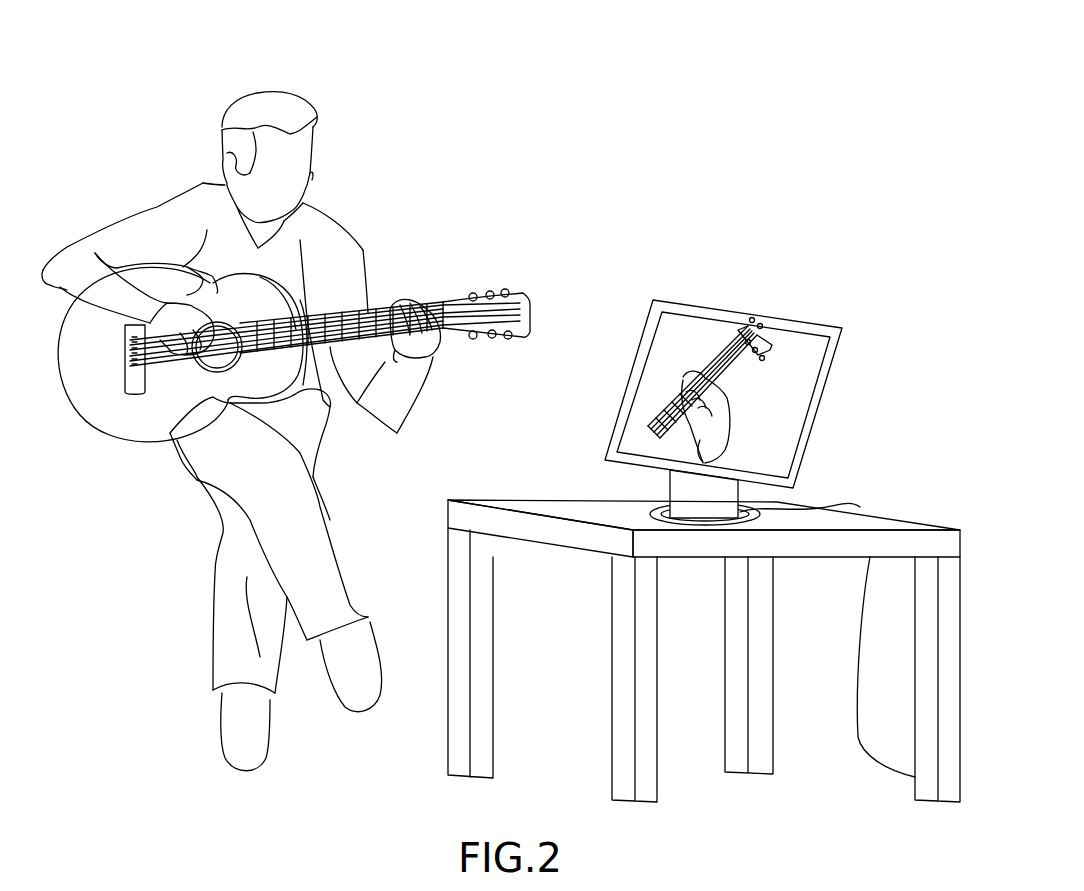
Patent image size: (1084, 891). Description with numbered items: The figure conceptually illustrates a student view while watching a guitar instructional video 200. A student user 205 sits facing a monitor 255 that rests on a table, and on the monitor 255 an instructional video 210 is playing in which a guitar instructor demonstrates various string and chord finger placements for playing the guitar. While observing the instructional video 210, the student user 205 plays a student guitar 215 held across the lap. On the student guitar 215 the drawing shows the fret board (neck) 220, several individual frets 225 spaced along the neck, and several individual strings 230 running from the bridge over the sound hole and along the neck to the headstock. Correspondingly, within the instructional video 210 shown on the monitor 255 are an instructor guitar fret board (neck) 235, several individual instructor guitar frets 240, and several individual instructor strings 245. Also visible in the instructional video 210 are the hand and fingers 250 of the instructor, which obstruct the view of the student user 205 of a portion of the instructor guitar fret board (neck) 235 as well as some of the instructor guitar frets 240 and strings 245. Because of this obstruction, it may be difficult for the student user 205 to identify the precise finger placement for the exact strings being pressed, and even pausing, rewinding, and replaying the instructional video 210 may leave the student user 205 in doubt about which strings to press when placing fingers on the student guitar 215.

The guitar instructional video (student view) 200 is at (734, 85).
The student user 205 is at (238, 130).
The instructional video 210 is at (693, 330).
The student guitar 215 is at (128, 413).
The fret board (neck) 220 is at (397, 433).
The frets 225 is at (380, 320).
The strings 230 is at (333, 457).
The instructor guitar fret board (neck) 235 is at (670, 403).
The instructor guitar frets 240 is at (653, 430).
The instructor strings 245 is at (773, 363).
The hand and fingers 250 is at (717, 402).
The monitor 255 is at (802, 463).